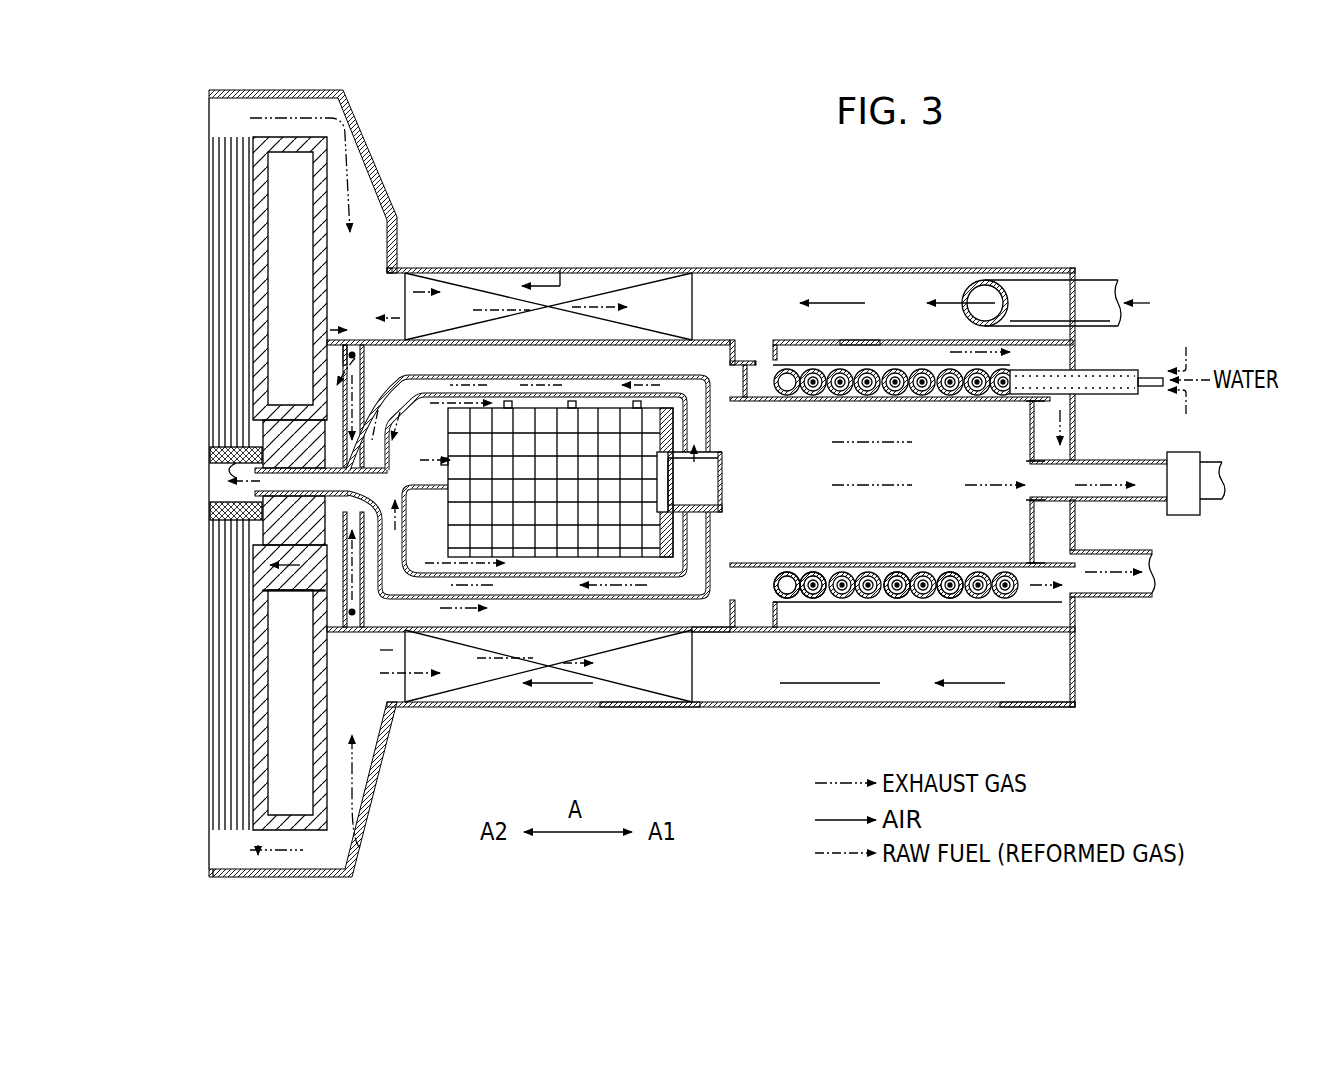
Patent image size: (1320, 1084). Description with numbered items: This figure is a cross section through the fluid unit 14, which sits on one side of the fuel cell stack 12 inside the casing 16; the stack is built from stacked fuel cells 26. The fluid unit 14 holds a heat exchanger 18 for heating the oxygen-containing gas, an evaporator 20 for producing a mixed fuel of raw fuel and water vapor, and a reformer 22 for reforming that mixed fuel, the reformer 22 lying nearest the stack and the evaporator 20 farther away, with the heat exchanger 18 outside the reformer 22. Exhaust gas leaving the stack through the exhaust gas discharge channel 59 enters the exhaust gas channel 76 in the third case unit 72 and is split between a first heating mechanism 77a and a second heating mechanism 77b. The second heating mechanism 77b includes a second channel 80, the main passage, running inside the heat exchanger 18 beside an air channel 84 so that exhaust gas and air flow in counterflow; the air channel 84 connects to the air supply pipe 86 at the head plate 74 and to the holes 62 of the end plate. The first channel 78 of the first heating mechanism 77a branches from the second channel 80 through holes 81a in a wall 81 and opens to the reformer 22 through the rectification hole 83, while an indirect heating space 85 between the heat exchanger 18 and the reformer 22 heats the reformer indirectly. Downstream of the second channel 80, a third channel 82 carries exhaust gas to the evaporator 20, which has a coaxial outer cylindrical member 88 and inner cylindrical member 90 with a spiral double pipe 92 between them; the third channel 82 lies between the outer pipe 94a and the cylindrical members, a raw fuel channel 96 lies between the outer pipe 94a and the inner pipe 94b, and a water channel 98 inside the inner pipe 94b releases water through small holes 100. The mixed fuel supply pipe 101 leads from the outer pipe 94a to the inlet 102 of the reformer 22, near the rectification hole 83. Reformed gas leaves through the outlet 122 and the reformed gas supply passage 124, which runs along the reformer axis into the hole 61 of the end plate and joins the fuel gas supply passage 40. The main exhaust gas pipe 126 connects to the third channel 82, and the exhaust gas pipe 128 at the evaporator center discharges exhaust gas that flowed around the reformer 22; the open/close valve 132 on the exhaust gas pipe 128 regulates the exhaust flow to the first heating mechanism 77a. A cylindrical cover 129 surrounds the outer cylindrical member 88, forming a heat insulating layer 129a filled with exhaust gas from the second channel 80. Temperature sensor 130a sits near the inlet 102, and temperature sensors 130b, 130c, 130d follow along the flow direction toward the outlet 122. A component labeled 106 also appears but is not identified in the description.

The fuel cell stack 12 is at (233, 135).
The fluid unit 14 is at (1060, 200).
The casing 16 is at (698, 707).
The heat exchanger 18 is at (632, 266).
The evaporator 20 is at (812, 360).
The reformer 22 is at (620, 406).
The fuel cells 26 is at (235, 737).
The fuel gas supply passage 40 is at (232, 458).
The exhaust gas discharge channel 59 is at (250, 878).
The hole 61 is at (250, 485).
The holes 62 is at (275, 578).
The third case unit 72 is at (752, 707).
The head plate 74 is at (1070, 707).
The exhaust gas channel 76 is at (363, 258).
The first heating mechanism 77a is at (340, 412).
The second heating mechanism 77b is at (445, 268).
The first channel 78 is at (365, 368).
The second channel 80 is at (488, 300).
The wall 81 is at (357, 612).
The holes 81a is at (348, 352).
The third channel 82 is at (760, 357).
The rectification hole 83 is at (262, 510).
The air channel 84 is at (565, 297).
The indirect heating space 85 is at (513, 615).
The air supply pipe 86 is at (1087, 308).
The outer cylindrical member 88 is at (1060, 603).
The inner cylindrical member 90 is at (922, 580).
The double pipe 92 is at (893, 598).
The outer pipe 94a is at (822, 598).
The inner pipe 94b is at (800, 598).
The raw fuel channel 96 is at (942, 598).
The water channel 98 is at (910, 598).
The holes 100 is at (868, 572).
The mixed fuel supply pipe 101 is at (587, 600).
The inlet 102 is at (452, 487).
The fuel cell stack wall 106 is at (272, 360).
The outlet 122 is at (703, 490).
The reformed gas supply passage 124 is at (508, 375).
The main exhaust gas pipe 126 is at (1130, 597).
The exhaust gas pipe 128 is at (1117, 501).
The cylindrical cover 129 is at (853, 338).
The heat insulating layer 129a is at (917, 352).
The temperature sensor 130a is at (365, 465).
The temperature sensor 130b is at (506, 400).
The temperature sensor 130c is at (572, 400).
The temperature sensor 130d is at (640, 400).
The open/close valve 132 is at (1185, 515).